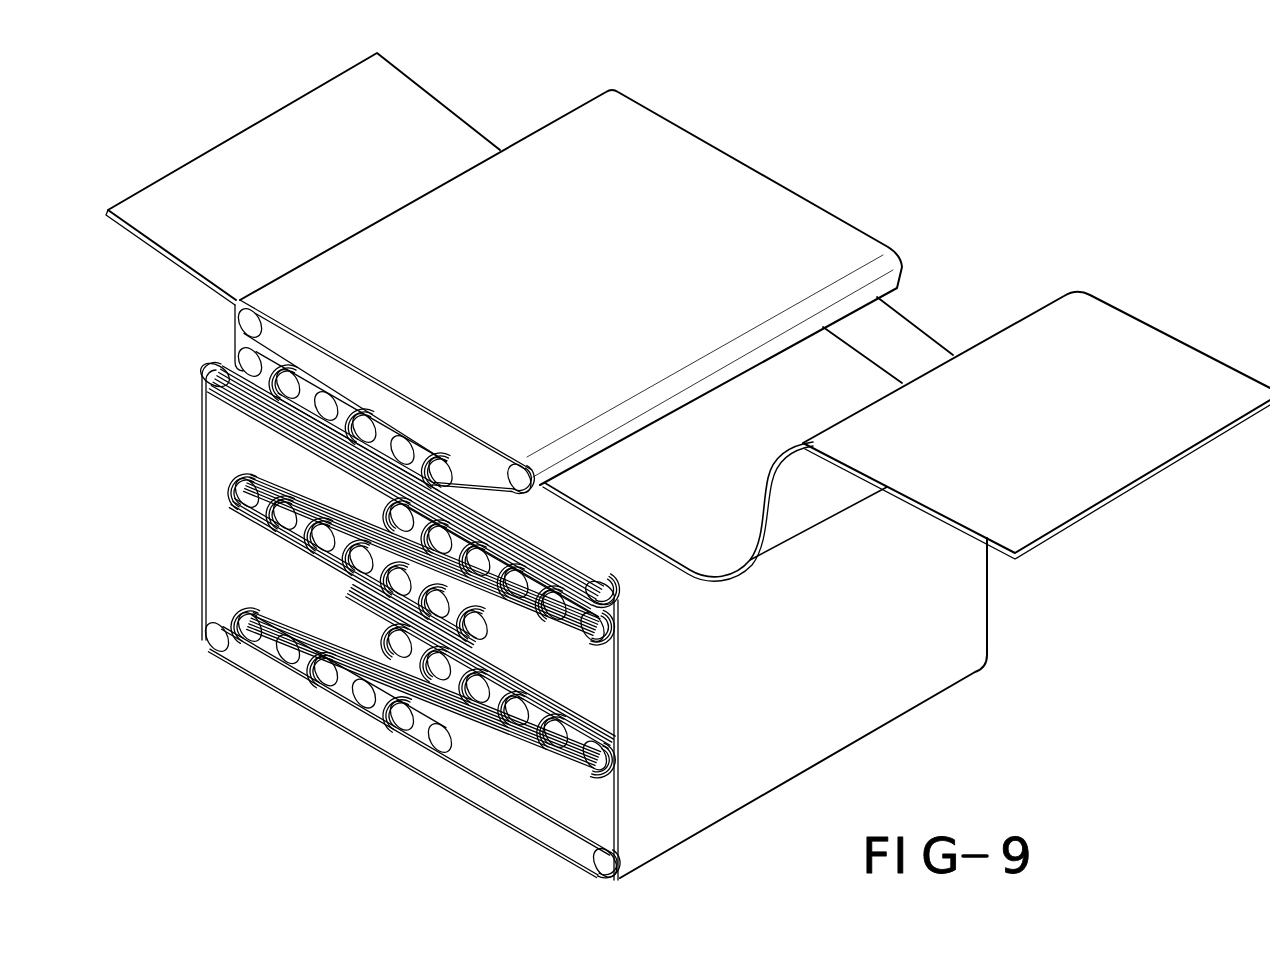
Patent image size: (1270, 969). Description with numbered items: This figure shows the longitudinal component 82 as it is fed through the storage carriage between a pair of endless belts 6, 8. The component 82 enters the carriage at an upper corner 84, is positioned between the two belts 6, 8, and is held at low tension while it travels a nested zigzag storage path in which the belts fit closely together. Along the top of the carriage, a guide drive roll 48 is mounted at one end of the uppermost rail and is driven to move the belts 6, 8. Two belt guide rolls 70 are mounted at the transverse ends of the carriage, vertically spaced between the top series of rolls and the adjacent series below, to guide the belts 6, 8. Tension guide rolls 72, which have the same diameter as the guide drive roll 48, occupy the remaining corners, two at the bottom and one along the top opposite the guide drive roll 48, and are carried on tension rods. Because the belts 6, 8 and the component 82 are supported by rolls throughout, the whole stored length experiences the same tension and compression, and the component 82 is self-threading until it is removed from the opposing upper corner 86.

The endless belt 6 is at (587, 284).
The endless belt 8 is at (836, 671).
The guide drive roll 48 is at (244, 322).
The belt guide roll 70 is at (214, 380).
The tension guide roll 72 is at (518, 476).
The longitudinal component 82 is at (1075, 437).
The upper corner 84 is at (503, 127).
The opposing upper corner 86 is at (925, 298).